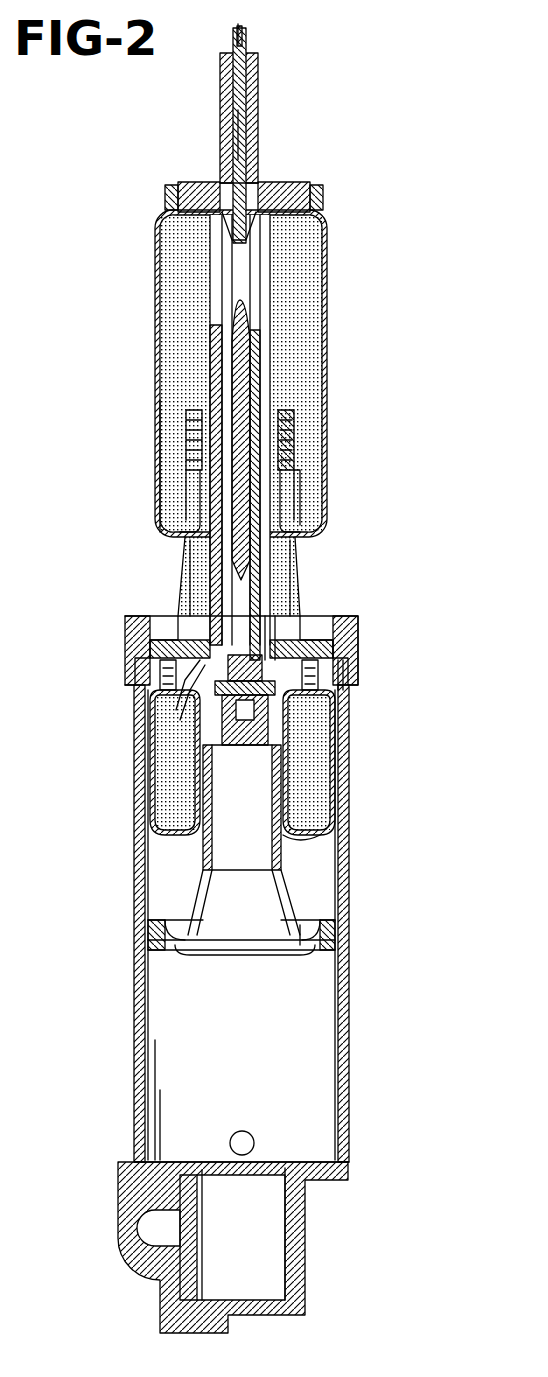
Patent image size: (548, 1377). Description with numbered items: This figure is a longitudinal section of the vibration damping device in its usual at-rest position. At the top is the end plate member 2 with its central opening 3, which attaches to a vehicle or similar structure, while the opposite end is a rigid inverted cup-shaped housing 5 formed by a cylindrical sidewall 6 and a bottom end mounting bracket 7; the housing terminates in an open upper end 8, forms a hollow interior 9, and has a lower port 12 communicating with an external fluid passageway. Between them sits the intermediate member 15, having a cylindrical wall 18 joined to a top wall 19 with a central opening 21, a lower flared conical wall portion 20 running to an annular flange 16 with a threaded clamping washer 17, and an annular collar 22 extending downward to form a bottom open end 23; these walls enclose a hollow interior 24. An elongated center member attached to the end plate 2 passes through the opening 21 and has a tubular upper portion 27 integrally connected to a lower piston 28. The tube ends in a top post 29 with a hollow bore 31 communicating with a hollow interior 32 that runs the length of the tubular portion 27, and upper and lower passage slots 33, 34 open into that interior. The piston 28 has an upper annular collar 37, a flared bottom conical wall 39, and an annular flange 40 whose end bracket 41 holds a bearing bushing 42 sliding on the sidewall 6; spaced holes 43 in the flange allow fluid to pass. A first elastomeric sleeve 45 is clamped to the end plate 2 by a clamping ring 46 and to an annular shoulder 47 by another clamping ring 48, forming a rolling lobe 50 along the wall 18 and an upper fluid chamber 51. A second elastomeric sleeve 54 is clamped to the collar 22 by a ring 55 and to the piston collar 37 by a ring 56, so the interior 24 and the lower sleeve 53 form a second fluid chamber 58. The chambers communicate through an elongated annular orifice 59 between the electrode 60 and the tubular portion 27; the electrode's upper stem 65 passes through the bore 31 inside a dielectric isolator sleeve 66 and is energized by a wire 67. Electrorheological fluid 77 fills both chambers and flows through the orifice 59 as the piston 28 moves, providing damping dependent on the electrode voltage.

The top end plate member 2 is at (282, 185).
The central opening 3 is at (215, 200).
The inverted cup-shaped housing 5 is at (348, 1050).
The cylindrical sidewall 6 is at (136, 1018).
The bottom end mounting bracket 7 is at (133, 1258).
The open upper end 8 is at (340, 688).
The hollow interior 9 is at (310, 868).
The lower port 12 is at (250, 1140).
The intermediate member 15 is at (298, 561).
The annular flange 16 is at (173, 645).
The threaded clamping washer 17 is at (350, 622).
The cylindrical wall 18 is at (190, 572).
The top wall 19 is at (292, 462).
The outwardly flared conical wall portion 20 is at (298, 600).
The central opening 21 is at (218, 417).
The annular collar 22 is at (172, 682).
The bottom open end 23 is at (190, 695).
The hollow interior 24 is at (283, 505).
The tubular upper portion 27 is at (268, 373).
The piston 28 is at (202, 853).
The top post 29 is at (222, 108).
The hollow bore 31 is at (240, 140).
The hollow interior 32 is at (250, 312).
The upper fluid passage slot 33 is at (266, 268).
The lower fluid passage slot 34 is at (270, 632).
The upper annular collar 37 is at (228, 668).
The bottom conical wall 39 is at (195, 898).
The annular flange 40 is at (183, 942).
The annular end bracket 41 is at (334, 938).
The cylindrical bearing bushing 42 is at (152, 938).
The circular spaced holes 43 is at (318, 942).
The first elastomeric sleeve 45 is at (158, 320).
The clamping ring 46 is at (314, 196).
The annular shoulder 47 is at (283, 413).
The clamping ring 48 is at (292, 438).
The rolling lobe 50 is at (178, 533).
The upper fluid chamber 51 is at (180, 355).
The lower sleeve 53 is at (337, 782).
The second elastomeric sleeve 54 is at (322, 835).
The clamping ring 55 is at (312, 685).
The clamping ring 56 is at (272, 722).
The second fluid chamber 58 is at (175, 785).
The elongated annular orifice 59 is at (225, 503).
The electrode 60 is at (252, 357).
The upper stem 65 is at (240, 74).
The dielectric isolator sleeve 66 is at (245, 115).
The wire 67 is at (244, 30).
The fluid 77 is at (185, 270).